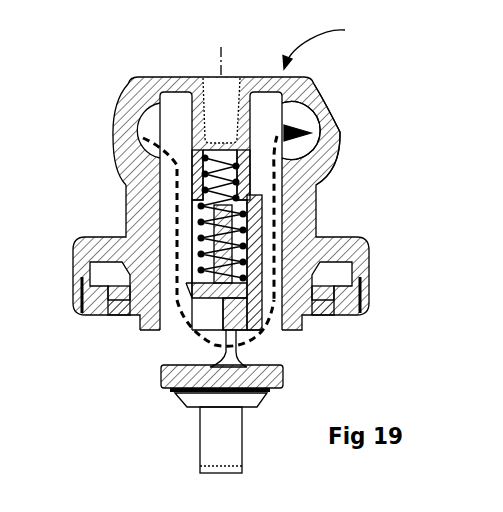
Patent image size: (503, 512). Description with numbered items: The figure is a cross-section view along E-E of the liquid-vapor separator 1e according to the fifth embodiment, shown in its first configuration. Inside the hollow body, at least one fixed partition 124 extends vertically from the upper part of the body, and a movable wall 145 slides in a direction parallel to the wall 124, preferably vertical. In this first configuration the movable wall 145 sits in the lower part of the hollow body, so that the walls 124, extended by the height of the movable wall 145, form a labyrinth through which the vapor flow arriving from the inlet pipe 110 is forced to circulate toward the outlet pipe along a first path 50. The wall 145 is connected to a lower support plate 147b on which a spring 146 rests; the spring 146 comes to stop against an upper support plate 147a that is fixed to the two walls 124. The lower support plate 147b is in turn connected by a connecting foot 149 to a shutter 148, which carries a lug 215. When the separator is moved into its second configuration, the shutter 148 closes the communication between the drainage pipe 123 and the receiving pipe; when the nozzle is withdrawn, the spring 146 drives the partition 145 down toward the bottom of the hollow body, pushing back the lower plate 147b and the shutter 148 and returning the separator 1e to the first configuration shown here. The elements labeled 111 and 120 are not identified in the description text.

The liquid-vapor separator 1e is at (335, 41).
The inlet pipe 110 is at (153, 126).
The port 111 is at (300, 122).
The flow direction 120 is at (263, 158).
The drainage pipe 123 is at (178, 318).
The fixed partition 124 is at (200, 180).
The movable wall 145 is at (253, 260).
The spring 146 is at (248, 220).
The upper support plate 147a is at (178, 150).
The lower support plate 147b is at (180, 300).
The shutter 148 is at (252, 380).
The connecting foot 149 is at (240, 343).
The lug 215 is at (213, 445).
The first path 50 is at (177, 237).